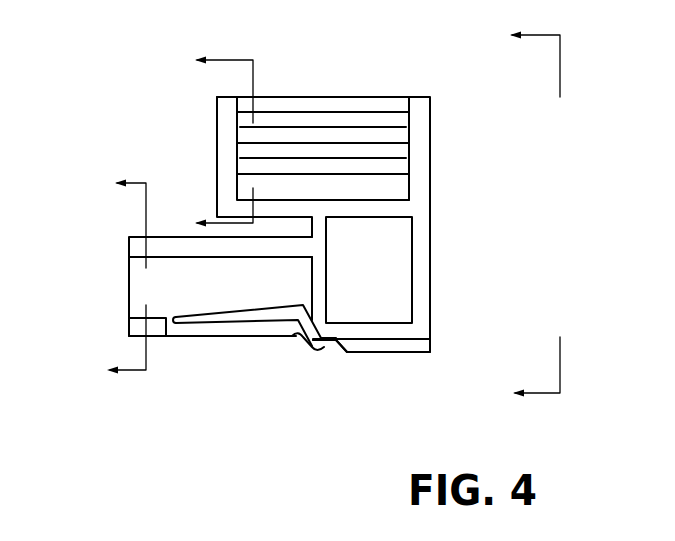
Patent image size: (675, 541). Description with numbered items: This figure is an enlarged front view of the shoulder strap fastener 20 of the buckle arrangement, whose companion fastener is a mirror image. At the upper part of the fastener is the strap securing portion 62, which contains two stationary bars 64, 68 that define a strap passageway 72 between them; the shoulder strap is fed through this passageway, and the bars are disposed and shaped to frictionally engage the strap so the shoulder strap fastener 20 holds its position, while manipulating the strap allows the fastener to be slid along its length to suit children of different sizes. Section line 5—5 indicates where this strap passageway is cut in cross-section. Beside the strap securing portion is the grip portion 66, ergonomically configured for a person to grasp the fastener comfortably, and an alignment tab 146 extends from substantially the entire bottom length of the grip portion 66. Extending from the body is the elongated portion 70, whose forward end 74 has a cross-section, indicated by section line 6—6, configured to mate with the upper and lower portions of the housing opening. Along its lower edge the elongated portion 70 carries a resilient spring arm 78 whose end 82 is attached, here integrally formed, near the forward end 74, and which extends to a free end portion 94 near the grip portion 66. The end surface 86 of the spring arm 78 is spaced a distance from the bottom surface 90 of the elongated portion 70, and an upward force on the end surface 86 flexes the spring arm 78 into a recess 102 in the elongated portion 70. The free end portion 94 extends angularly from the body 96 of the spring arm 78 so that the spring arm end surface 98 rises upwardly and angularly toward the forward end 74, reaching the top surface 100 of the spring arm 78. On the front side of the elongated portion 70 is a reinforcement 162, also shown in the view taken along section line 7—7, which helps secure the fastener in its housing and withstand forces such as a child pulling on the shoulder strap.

The shoulder strap fastener 20 is at (432, 213).
The strap securing portion 62 is at (437, 135).
The stationary bar 64 is at (393, 102).
The grip portion 66 is at (392, 264).
The stationary bar 68 is at (395, 163).
The elongated portion 70 is at (200, 347).
The strap passageway 72 is at (308, 189).
The forward end 74 is at (127, 263).
The resilient spring arm 78 is at (242, 338).
The end 82 is at (173, 345).
The end surface 86 is at (297, 348).
The bottom surface 90 is at (135, 338).
The free end portion 94 is at (288, 348).
The body 96 is at (215, 325).
The spring arm end surface 98 is at (317, 347).
The top surface 100 is at (298, 318).
The recess 102 is at (265, 338).
The alignment tab 146 is at (408, 353).
The reinforcement 162 is at (127, 327).
The section line 5- 5 is at (214, 126).
The section line 6- 6 is at (534, 198).
The section line 7- 7 is at (125, 276).